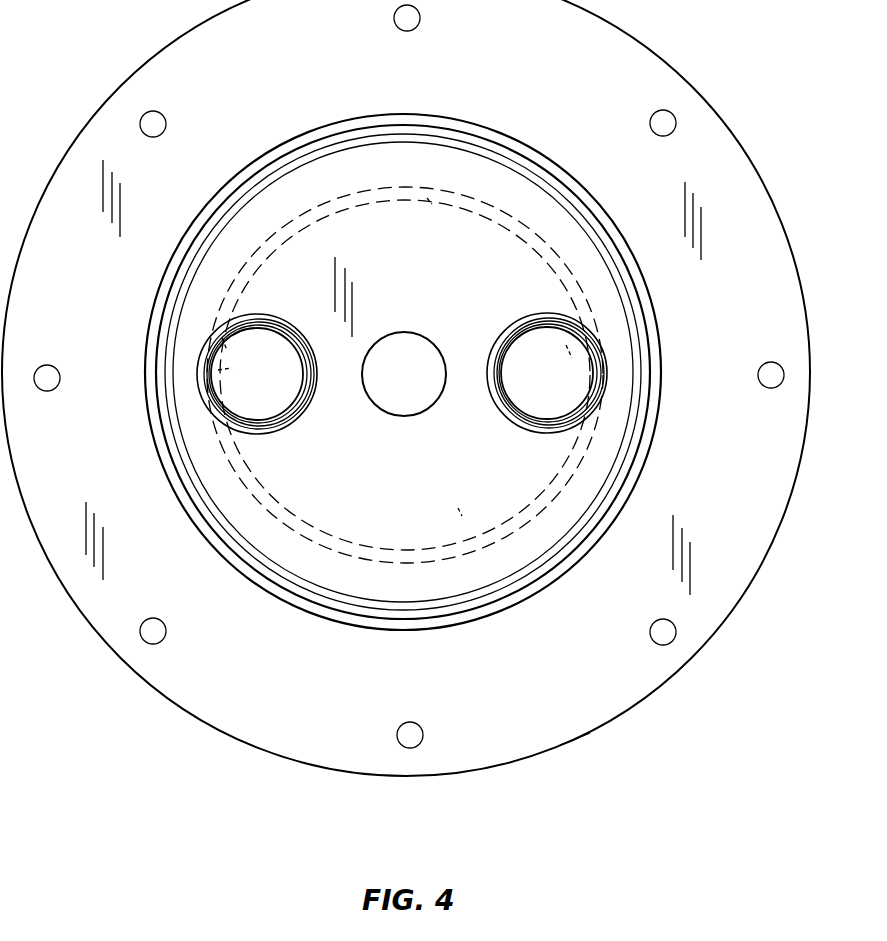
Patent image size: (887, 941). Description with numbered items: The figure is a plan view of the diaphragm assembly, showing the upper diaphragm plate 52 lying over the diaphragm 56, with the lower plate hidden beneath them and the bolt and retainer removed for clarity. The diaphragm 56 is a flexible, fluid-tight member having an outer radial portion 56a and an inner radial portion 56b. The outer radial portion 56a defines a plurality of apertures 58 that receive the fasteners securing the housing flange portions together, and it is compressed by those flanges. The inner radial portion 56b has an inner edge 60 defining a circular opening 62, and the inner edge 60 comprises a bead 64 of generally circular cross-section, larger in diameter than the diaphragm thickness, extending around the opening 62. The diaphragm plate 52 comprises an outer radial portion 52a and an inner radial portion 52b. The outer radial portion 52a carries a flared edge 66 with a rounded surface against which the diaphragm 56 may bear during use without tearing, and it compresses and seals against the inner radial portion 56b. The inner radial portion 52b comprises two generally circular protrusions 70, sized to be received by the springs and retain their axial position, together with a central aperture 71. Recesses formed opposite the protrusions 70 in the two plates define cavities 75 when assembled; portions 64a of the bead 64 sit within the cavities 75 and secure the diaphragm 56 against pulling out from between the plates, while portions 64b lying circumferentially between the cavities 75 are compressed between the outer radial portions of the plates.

The diaphragm plate 52 is at (567, 170).
The outer radial portion 52a is at (367, 181).
The inner radial portion 52b is at (451, 320).
The diaphragm 56 is at (727, 616).
The outer radial portion 56a is at (590, 733).
The inner radial portion 56b is at (307, 548).
The apertures 58 is at (673, 627).
The inner edge 60 is at (275, 514).
The circular opening 62 is at (504, 514).
The bead 64 is at (388, 549).
The portions of the bead 64a is at (220, 371).
The portions of the bead 64b is at (429, 200).
The flared edge 66 is at (653, 423).
The protrusions 70 is at (268, 409).
The central aperture 71 is at (404, 333).
The cavities 75 is at (228, 345).